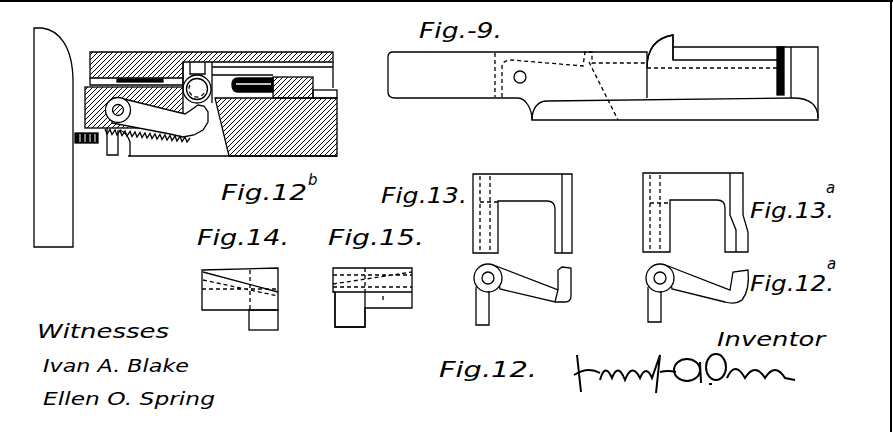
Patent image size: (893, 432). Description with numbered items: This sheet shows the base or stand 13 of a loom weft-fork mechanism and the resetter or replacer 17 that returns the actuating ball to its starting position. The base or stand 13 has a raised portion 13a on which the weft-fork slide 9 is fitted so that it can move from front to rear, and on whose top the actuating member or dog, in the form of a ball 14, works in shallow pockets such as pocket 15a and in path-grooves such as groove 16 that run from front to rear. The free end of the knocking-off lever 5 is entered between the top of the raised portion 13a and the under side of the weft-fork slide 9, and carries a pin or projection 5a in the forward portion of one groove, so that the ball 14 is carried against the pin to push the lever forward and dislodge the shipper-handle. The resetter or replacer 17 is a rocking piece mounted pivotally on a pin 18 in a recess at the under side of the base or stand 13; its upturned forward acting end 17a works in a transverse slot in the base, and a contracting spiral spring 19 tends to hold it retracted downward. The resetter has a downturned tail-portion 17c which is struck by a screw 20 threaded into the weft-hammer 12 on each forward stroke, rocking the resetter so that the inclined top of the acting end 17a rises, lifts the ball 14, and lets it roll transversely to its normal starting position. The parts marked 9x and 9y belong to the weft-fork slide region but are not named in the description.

In FIG. 12B, the knocking-off lever 5 is at (314, 78).
In FIG. 12B, the pin or projection 5a is at (246, 68).
In FIG. 12B, the weft-fork slide 9 is at (297, 50).
In FIG. 12B, the casing plate 9x is at (182, 53).
In FIG. 12B, the roller bracket 9y is at (208, 62).
In FIG. 12B, the weft-hammer 12 is at (73, 214).
In FIG. 12B, the base or stand 13 is at (232, 0).
In FIG. 9, the base or stand 13 is at (725, 110).
In FIG. 9, the raised portion 13a is at (729, 47).
In FIG. 12B, the ball 14 is at (193, 63).
In FIG. 12B, the shallow pocket 15a is at (366, 98).
In FIG. 12B, the path-groove 16 is at (218, 99).
In FIG. 13, the resetter or replacer 17 is at (525, 181).
In FIG. 14, the resetter or replacer 17 is at (235, 310).
In FIG. 15, the resetter or replacer 17 is at (392, 262).
In FIG. 12, the resetter or replacer 17 is at (520, 289).
In FIG. 13, the acting end 17a is at (566, 194).
In FIG. 14, the acting end 17a is at (202, 286).
In FIG. 12, the acting end 17a is at (571, 270).
In FIG. 14, the tail-portion 17c is at (268, 330).
In FIG. 15, the tail-portion 17c is at (350, 323).
In FIG. 12, the tail-portion 17c is at (478, 323).
In FIG. 12B, the pin 18 is at (110, 110).
In FIG. 12B, the contracting spiral spring 19 is at (152, 143).
In FIG. 12B, the screw 20 is at (87, 147).